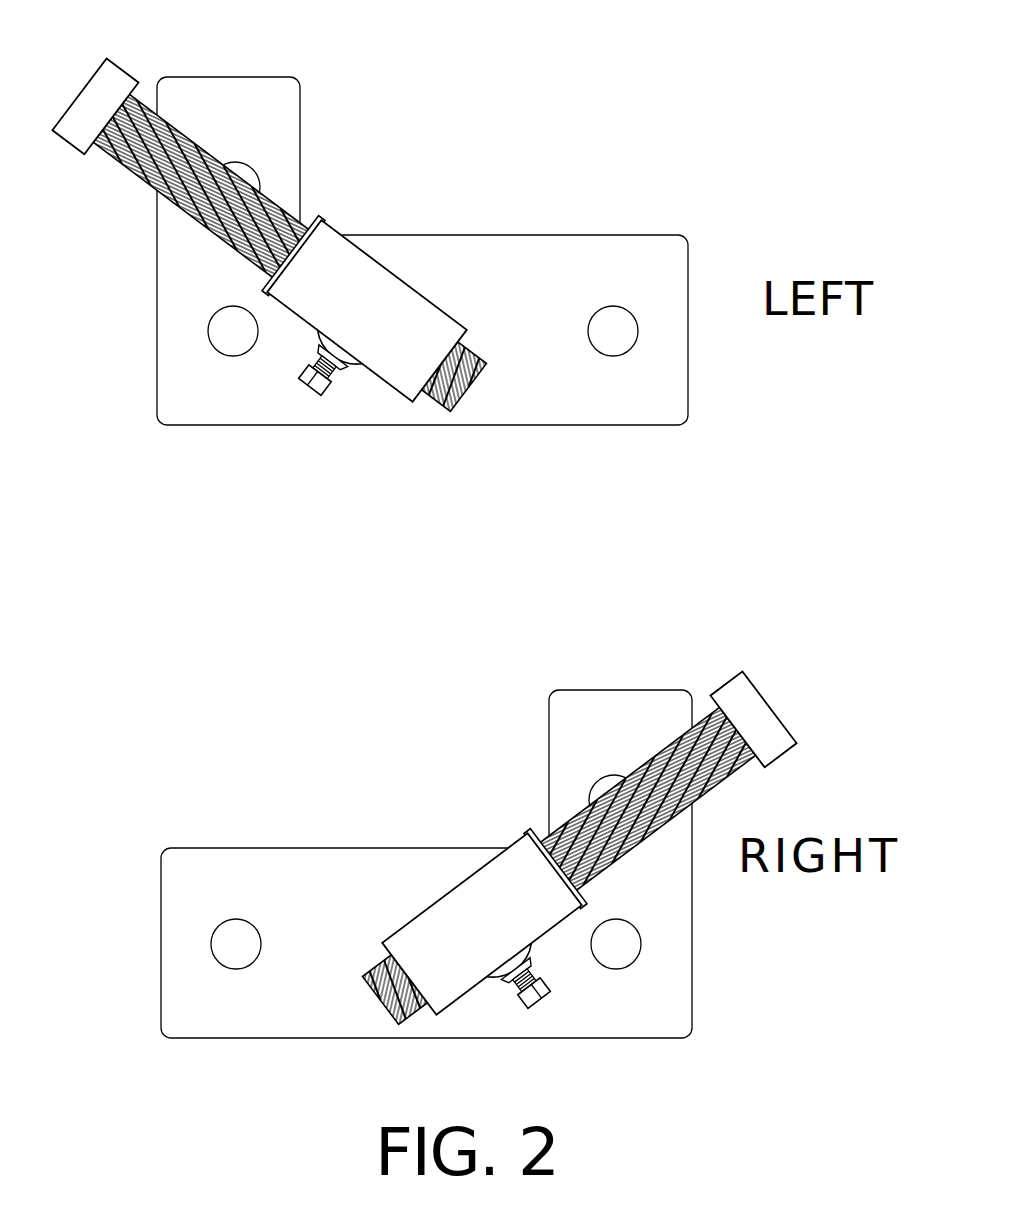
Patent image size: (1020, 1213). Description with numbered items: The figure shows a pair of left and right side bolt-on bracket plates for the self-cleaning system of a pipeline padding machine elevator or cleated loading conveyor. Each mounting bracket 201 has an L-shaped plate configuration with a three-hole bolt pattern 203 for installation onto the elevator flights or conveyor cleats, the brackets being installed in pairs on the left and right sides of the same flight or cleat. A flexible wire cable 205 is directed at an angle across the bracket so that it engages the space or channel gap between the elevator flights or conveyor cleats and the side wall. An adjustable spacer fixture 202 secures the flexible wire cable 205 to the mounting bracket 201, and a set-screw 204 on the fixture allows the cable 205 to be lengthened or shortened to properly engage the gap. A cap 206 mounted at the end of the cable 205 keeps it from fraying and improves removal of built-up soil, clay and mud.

The mounting bracket 201 is at (272, 137).
The adjustable spacer fixture 202 is at (355, 280).
The three bolt hole pattern 203 is at (606, 331).
The set-screw 204 is at (311, 398).
The flexible wire cable 205 is at (150, 166).
The cap 206 is at (106, 85).